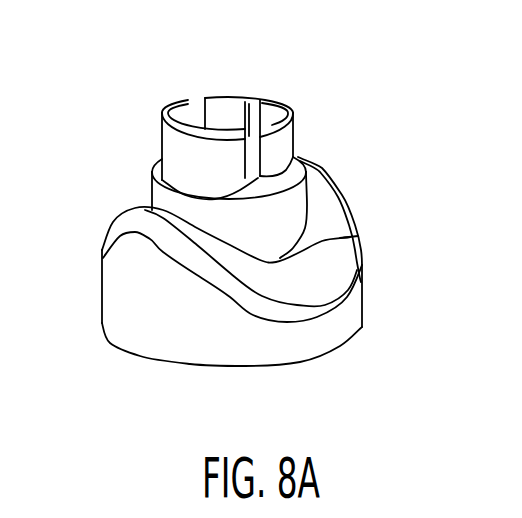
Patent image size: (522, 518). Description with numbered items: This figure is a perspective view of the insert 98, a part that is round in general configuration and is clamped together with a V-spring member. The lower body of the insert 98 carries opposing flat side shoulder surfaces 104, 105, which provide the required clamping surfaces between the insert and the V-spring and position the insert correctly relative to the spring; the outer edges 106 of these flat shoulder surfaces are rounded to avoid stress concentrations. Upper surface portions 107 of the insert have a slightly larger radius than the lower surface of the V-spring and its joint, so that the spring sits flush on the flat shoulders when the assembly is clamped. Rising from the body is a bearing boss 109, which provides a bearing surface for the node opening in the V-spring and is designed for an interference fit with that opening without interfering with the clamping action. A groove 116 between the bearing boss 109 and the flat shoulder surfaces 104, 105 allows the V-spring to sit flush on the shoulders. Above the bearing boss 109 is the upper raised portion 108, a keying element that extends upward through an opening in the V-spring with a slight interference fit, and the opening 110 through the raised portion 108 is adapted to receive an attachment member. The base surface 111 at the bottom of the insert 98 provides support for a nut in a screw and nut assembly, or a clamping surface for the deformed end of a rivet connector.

The insert 98 is at (397, 190).
The flat side shoulder surface 104 is at (323, 283).
The flat side shoulder surface 105 is at (136, 210).
The outer edges of the flat side shoulder surfaces 106 is at (235, 297).
The upper surface portions 107 is at (313, 170).
The upper raised portion 108 is at (255, 87).
The bearing boss 109 is at (293, 208).
The opening 110 is at (218, 108).
The base surface 111 is at (344, 347).
The groove 116 is at (352, 238).